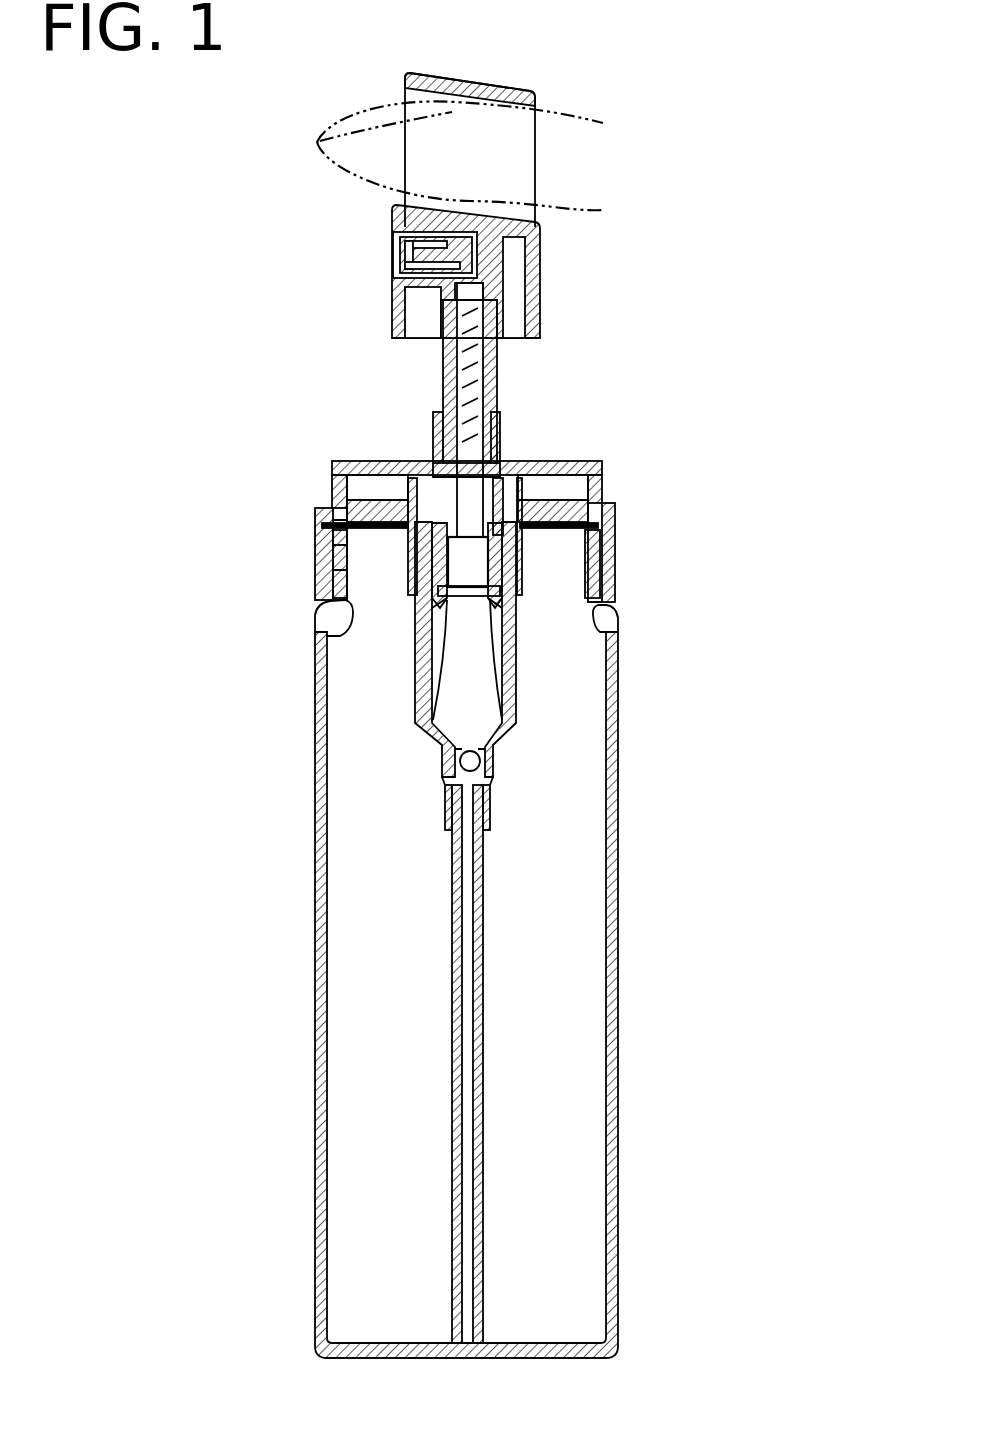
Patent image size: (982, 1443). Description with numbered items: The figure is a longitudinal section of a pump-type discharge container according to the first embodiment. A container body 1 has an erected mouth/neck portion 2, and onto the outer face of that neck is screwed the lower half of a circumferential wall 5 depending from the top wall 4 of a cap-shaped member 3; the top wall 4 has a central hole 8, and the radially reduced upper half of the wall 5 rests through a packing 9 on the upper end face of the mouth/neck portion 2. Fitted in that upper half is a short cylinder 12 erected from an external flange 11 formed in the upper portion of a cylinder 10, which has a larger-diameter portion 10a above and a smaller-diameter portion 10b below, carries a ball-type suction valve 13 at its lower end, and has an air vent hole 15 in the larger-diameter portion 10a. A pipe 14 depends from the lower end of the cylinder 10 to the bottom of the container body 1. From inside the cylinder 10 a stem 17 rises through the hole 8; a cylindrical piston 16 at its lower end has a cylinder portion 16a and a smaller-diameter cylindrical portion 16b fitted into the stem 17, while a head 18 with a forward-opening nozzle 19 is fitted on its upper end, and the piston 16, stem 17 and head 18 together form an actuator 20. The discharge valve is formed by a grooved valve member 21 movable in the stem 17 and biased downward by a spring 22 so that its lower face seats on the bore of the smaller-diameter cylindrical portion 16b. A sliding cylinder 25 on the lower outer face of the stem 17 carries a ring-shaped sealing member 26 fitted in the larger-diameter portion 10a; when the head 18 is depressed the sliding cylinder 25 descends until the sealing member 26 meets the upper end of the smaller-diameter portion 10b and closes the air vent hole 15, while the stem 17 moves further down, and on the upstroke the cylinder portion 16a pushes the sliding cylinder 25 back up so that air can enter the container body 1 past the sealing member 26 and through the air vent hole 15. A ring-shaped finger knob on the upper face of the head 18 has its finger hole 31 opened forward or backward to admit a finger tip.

The container body 1 is at (300, 1034).
The mouth/neck portion 2 is at (325, 635).
The cap-shaped member 3 is at (643, 494).
The top wall 4 is at (350, 462).
The circumferential wall 5 is at (313, 583).
The hole 8 is at (430, 455).
The packing 9 is at (610, 575).
The cylinder 10 is at (571, 676).
The larger-diameter portion 10a is at (610, 635).
The smaller-diameter portion 10b is at (512, 722).
The external flange 11 is at (610, 537).
The short cylinder 12 is at (607, 473).
The suction valve 13 is at (480, 768).
The pipe 14 is at (483, 1125).
The air vent hole 15 is at (402, 547).
The cylindrical piston 16 is at (417, 690).
The cylinder portion 16a is at (513, 677).
The smaller-diameter cylindrical portion 16b is at (420, 490).
The stem 17 is at (395, 313).
The head 18 is at (540, 263).
The nozzle 19 is at (395, 254).
The actuator 20 is at (432, 372).
The valve member 21 is at (500, 449).
The spring 22 is at (478, 392).
The sliding cylinder 25 is at (497, 418).
The sealing member 26 is at (330, 541).
The finger hole 31 is at (508, 106).